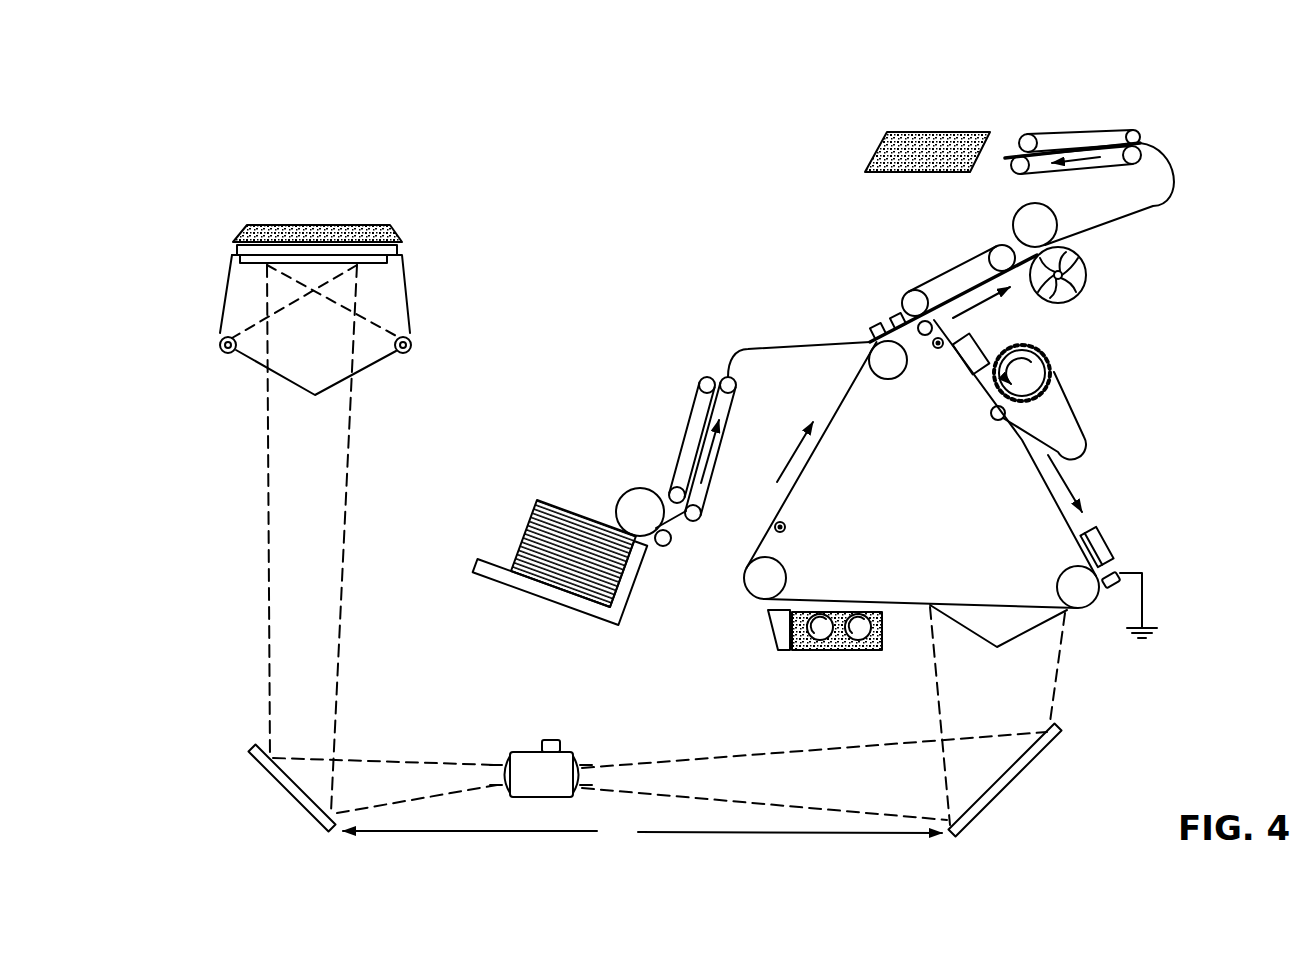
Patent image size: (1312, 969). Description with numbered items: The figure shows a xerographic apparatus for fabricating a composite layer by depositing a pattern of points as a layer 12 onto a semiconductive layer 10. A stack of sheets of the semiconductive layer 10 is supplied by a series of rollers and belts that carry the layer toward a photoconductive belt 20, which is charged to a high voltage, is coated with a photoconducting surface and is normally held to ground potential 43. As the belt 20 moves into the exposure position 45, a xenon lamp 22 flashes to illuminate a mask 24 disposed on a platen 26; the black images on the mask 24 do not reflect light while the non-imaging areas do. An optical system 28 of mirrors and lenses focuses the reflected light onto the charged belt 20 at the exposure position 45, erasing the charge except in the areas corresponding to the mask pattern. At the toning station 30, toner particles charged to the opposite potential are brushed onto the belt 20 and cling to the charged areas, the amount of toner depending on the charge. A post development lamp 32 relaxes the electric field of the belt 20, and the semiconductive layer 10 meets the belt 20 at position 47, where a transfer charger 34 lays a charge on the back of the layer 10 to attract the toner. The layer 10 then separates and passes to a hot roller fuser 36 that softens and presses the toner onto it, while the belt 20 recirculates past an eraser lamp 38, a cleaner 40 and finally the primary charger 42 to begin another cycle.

The semiconductive layer 10 is at (518, 525).
The layer of nonconductive or semiconductive points 12 is at (928, 135).
The photoconductive belt 20 is at (815, 453).
The xenon lamp 22 is at (553, 738).
The mask 24 is at (318, 232).
The platen 26 is at (397, 265).
The optical system 28 is at (642, 832).
The toning station 30 is at (833, 648).
The post development lamp 32 is at (785, 528).
The transfer charger 34 is at (888, 383).
The hot roller fuser 36 is at (1057, 227).
The eraser lamp 38 is at (940, 348).
The cleaner 40 is at (1055, 375).
The primary charger 42 is at (1105, 538).
The ground potential 43 is at (1147, 600).
The exposure position 45 is at (1023, 640).
The contact position 47 is at (858, 335).